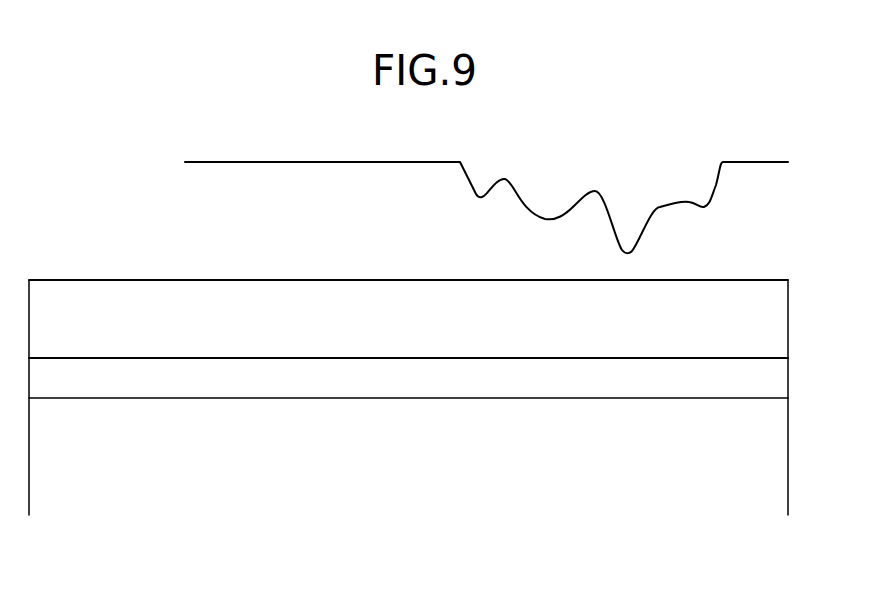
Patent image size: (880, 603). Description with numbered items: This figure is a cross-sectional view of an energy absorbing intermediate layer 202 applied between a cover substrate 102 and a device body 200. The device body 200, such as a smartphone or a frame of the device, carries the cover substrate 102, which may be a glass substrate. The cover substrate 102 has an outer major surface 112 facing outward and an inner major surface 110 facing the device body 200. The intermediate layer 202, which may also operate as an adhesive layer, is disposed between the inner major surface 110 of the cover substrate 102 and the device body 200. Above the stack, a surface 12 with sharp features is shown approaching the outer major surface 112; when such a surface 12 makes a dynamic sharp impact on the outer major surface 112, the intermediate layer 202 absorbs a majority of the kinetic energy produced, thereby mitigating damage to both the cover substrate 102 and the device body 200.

The surface 12 is at (664, 236).
The cover substrate 102 is at (217, 289).
The outer major surface 112 is at (372, 280).
The inner major surface 110 is at (355, 360).
The energy absorbing intermediate layer 202 is at (567, 383).
The device body 200 is at (787, 450).